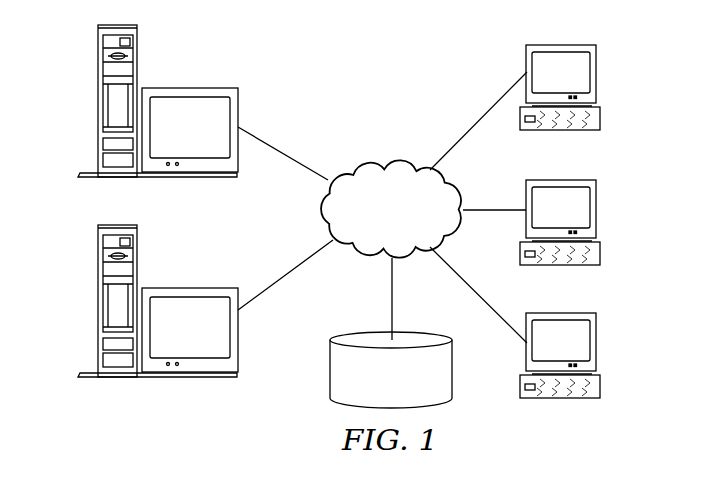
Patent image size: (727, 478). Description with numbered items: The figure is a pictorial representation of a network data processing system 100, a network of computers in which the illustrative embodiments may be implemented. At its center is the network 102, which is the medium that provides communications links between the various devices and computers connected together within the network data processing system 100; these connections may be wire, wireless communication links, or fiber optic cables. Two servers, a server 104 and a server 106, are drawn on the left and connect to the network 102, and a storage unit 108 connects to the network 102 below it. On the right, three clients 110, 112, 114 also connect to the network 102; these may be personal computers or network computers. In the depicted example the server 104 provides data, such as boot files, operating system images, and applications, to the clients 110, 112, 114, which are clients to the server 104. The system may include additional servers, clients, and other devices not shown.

The network data processing system 100 is at (441, 61).
The network 102 is at (363, 162).
The server 104 is at (98, 102).
The server 106 is at (98, 302).
The storage unit 108 is at (330, 378).
The client 110 is at (597, 72).
The client 112 is at (597, 208).
The client 114 is at (597, 343).